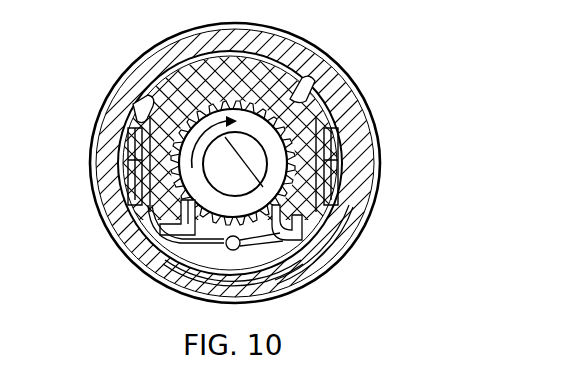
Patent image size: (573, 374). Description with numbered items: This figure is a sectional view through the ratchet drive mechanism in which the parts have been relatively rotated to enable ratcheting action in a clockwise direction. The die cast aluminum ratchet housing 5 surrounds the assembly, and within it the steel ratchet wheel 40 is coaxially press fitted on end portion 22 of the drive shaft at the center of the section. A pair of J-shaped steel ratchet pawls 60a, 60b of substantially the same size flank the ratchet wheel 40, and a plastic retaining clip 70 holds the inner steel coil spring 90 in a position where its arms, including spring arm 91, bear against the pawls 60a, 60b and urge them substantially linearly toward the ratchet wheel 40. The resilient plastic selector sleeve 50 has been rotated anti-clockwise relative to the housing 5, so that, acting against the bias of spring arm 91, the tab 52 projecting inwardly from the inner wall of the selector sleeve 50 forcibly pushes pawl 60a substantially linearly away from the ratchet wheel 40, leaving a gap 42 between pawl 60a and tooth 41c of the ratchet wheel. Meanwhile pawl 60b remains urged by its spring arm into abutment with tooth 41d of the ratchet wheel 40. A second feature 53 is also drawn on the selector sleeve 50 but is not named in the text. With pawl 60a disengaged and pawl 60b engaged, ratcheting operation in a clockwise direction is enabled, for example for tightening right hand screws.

The ratchet housing 5 is at (203, 78).
The selector sleeve 50 is at (340, 58).
The tab 52 is at (135, 106).
The notch 53 is at (300, 87).
The end portion 22 is at (240, 152).
The ratchet wheel 40 is at (292, 168).
The ratchet pawl 60a is at (135, 172).
The ratchet pawl 60b is at (323, 182).
The tooth 41c is at (187, 208).
The tooth 41d is at (306, 208).
The gap 42 is at (160, 222).
The spring arm 91 is at (172, 252).
The coil spring 90 is at (226, 250).
The retaining clip 70 is at (260, 255).